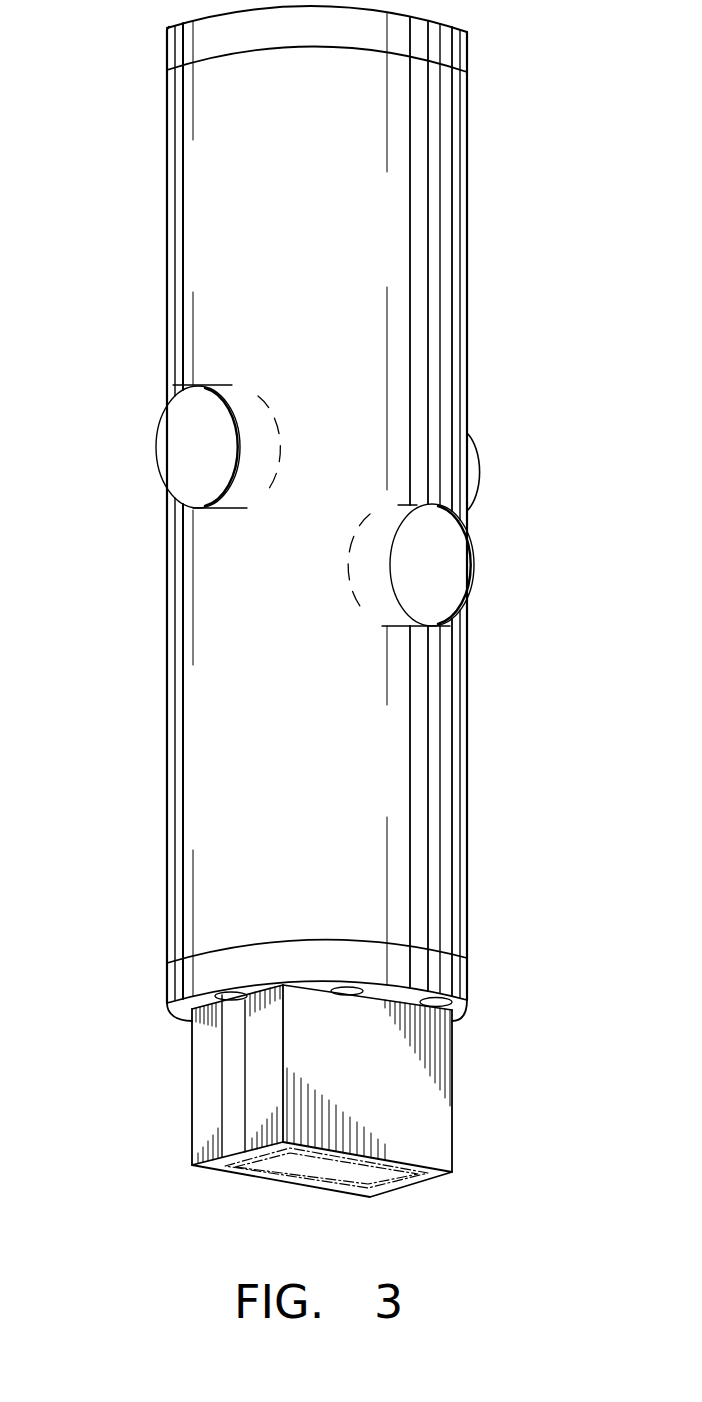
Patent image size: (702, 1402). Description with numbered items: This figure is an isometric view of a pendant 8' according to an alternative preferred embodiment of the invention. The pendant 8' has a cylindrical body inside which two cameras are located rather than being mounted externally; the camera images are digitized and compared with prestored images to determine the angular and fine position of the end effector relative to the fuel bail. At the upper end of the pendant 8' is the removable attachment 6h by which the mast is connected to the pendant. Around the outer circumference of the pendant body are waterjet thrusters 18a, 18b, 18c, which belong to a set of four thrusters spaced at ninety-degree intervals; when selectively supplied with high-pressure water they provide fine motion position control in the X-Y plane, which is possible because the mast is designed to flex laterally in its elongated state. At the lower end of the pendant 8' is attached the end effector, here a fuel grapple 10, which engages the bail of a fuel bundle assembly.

The pendant 8' is at (398, 516).
The removable attachment 6h is at (468, 45).
The waterjet thruster 18a is at (170, 450).
The waterjet thruster 18b is at (453, 580).
The waterjet thruster 18c is at (476, 495).
The fuel grapple 10 is at (433, 1115).